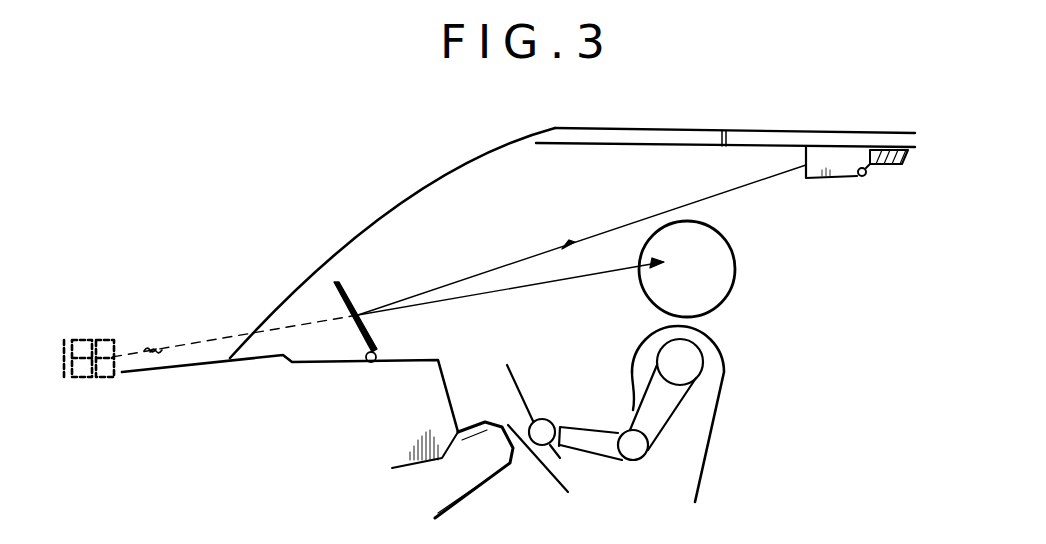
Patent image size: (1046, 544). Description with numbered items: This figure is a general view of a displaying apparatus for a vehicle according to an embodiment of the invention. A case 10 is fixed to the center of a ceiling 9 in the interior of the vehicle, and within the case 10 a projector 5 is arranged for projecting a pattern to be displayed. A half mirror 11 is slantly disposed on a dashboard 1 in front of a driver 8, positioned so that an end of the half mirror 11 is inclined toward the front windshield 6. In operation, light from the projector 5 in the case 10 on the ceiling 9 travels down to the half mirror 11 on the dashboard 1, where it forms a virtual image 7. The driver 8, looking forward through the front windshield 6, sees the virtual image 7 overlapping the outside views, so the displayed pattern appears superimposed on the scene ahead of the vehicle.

The dashboard 1 is at (317, 422).
The projector 5 is at (815, 185).
The front windshield 6 is at (478, 170).
The virtual image 7 is at (80, 340).
The driver 8 is at (726, 285).
The ceiling 9 is at (866, 137).
The case 10 is at (845, 167).
The half mirror 11 is at (350, 304).